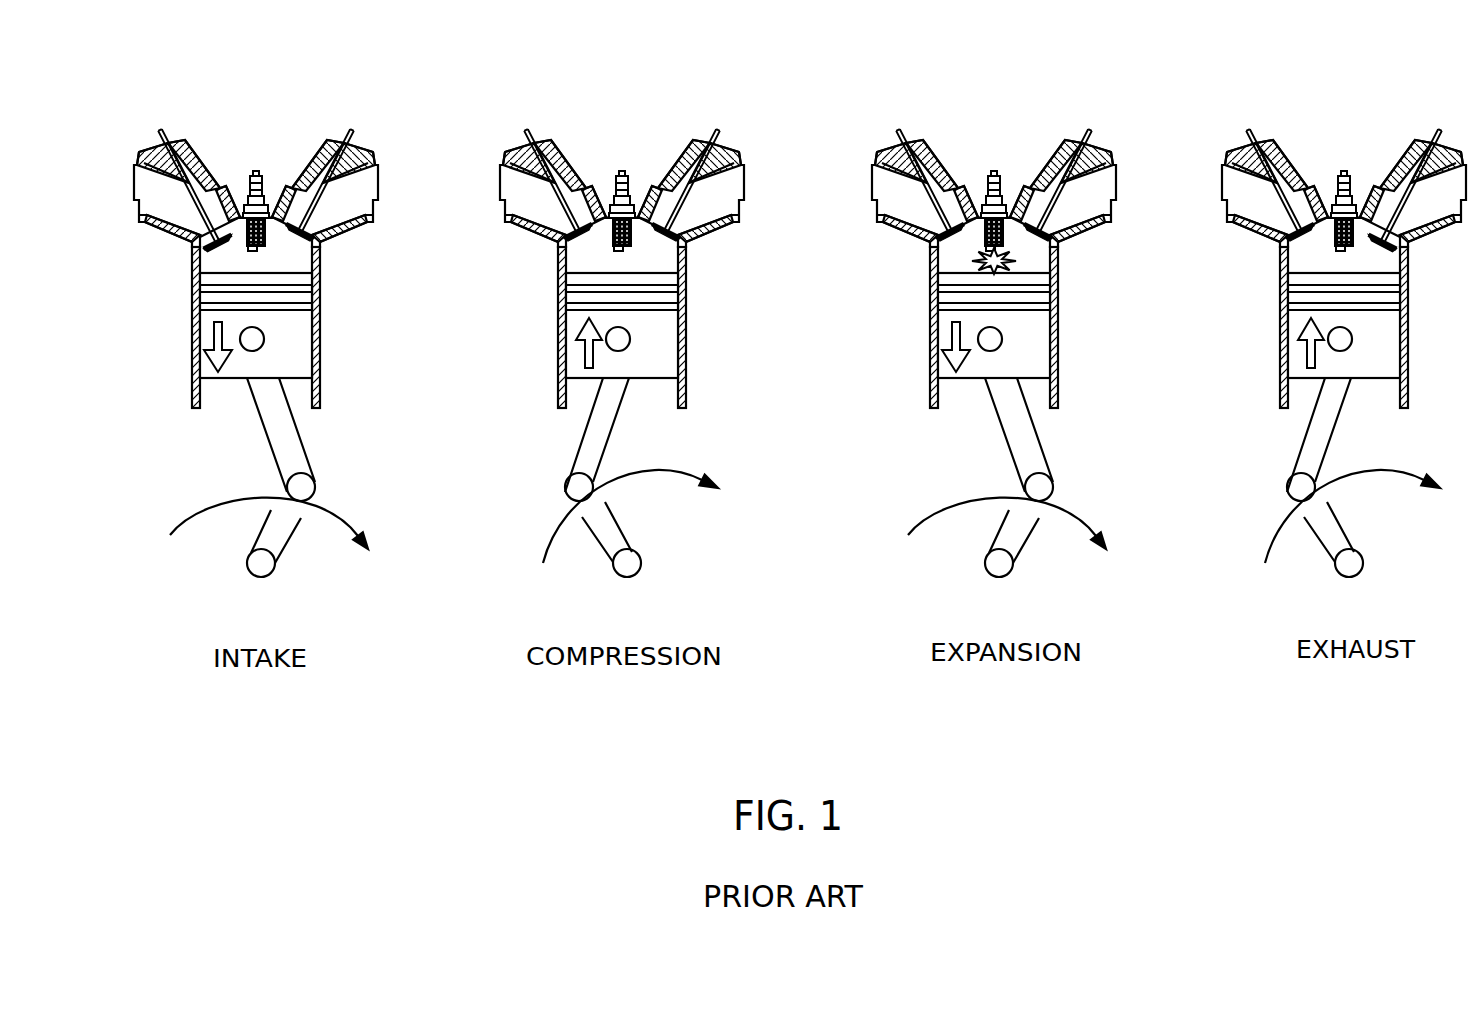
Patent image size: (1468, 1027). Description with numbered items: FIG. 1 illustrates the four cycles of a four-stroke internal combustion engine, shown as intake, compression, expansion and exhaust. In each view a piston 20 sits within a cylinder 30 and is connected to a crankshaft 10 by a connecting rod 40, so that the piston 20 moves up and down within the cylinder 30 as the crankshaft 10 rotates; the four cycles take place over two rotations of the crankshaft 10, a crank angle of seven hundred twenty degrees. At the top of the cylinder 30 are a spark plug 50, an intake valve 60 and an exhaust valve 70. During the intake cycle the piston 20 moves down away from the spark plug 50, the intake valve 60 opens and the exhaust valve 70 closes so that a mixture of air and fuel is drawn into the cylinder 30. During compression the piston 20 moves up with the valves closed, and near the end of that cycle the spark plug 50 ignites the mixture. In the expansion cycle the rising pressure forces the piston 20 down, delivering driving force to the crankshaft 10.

The crankshaft 10 is at (247, 551).
The piston 20 is at (256, 325).
The cylinder 30 is at (231, 327).
The connecting rod 40 is at (308, 439).
The spark plug 50 is at (259, 185).
The intake valve 60 is at (192, 194).
The exhaust valve 70 is at (323, 191).